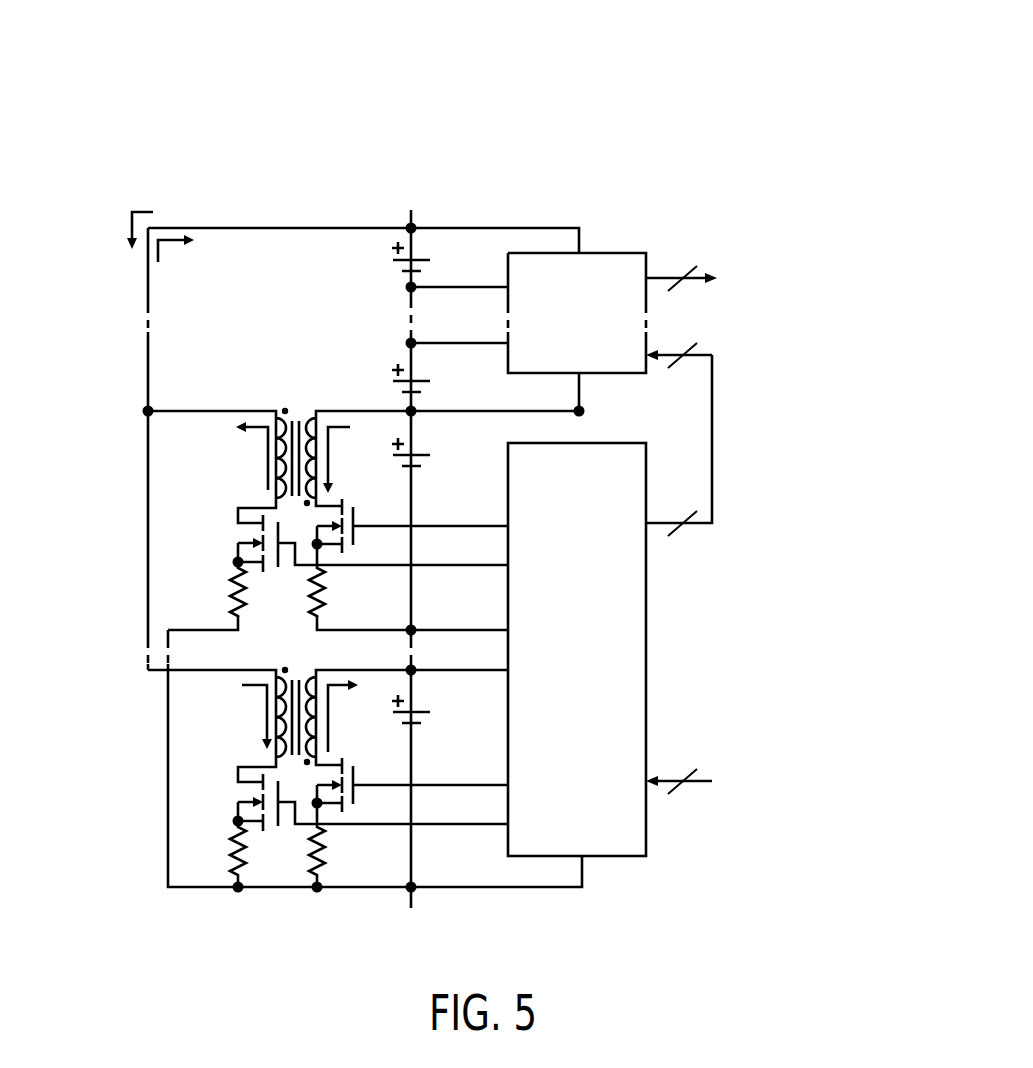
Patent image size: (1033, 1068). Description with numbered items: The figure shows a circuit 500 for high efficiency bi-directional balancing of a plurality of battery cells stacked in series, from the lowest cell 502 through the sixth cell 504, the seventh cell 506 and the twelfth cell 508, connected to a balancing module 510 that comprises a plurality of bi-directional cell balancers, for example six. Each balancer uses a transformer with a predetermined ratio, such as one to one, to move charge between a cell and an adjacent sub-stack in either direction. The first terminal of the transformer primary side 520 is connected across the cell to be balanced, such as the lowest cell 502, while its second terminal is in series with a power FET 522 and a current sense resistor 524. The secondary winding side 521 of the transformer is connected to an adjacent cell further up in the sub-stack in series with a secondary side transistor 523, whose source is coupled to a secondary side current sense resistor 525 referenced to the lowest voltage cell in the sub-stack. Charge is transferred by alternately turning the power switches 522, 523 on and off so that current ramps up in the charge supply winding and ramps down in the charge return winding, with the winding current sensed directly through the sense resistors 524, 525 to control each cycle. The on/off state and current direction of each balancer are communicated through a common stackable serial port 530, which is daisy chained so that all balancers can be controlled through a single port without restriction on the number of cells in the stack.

The circuit 500 is at (149, 98).
The cell 1 502 is at (420, 707).
The cell 6 504 is at (420, 450).
The cell 7 506 is at (420, 378).
The cell 12 508 is at (420, 257).
The balancing module 510 is at (647, 636).
The transformer primary side 520 is at (318, 665).
The secondary winding side of transformer 521 is at (270, 665).
The power FET 522 is at (328, 757).
The secondary side transistor 523 is at (237, 782).
The current sense resistor 524 is at (328, 862).
The secondary side current sense resistor 525 is at (233, 828).
The stackable serial port 530 is at (708, 507).